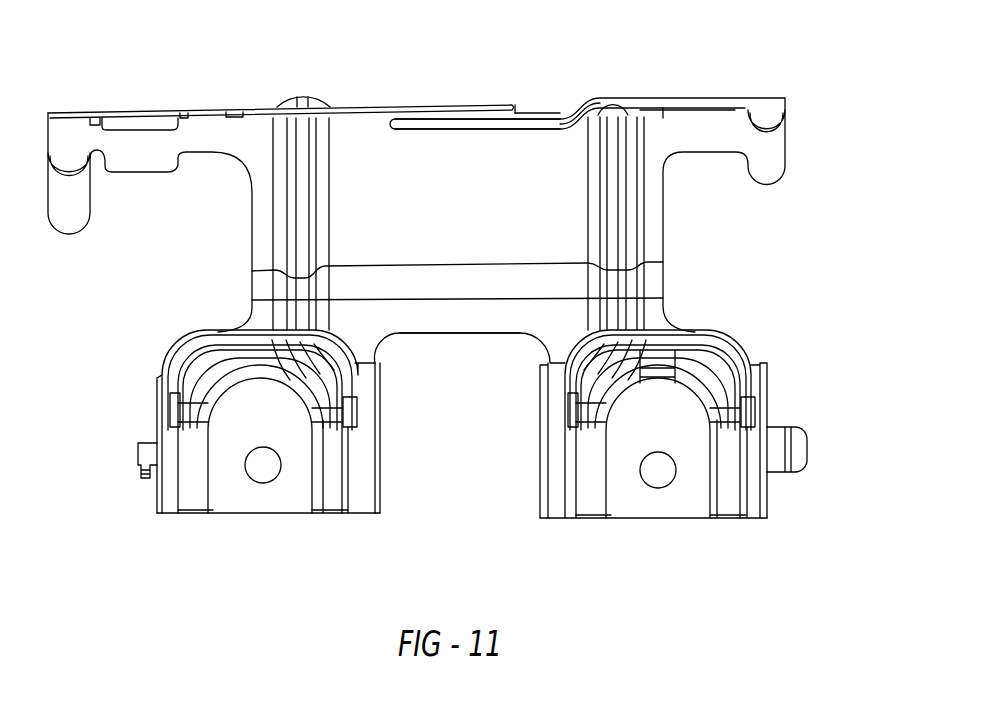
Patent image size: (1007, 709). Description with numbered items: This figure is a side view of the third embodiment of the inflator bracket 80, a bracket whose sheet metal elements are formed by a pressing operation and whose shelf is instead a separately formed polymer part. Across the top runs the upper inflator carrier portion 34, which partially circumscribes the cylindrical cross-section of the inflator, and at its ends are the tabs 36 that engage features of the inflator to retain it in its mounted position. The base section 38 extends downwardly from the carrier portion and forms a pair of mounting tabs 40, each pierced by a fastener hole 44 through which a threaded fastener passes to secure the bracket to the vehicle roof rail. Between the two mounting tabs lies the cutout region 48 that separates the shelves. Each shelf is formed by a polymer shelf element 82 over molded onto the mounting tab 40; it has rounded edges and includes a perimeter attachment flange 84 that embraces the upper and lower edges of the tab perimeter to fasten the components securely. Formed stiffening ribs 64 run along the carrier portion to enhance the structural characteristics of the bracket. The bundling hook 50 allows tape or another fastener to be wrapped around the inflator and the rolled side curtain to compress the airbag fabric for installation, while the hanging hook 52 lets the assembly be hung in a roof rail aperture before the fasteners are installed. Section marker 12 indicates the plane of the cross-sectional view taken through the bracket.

The section line for FIG. 12 is at (264, 83).
The upper inflator carrier portion 34 is at (463, 188).
The tabs 36 is at (73, 222).
The base section 38 is at (558, 288).
The mounting tabs 40 is at (297, 514).
The fastener holes 44 is at (277, 458).
The cutout region 48 is at (502, 335).
The bundling hook 50 is at (449, 103).
The hanging hook 52 is at (777, 473).
The stiffening ribs 64 is at (635, 190).
The inflator bracket 80 is at (357, 58).
The shelf element 82 is at (182, 338).
The perimeter attachment flange 84 is at (157, 492).